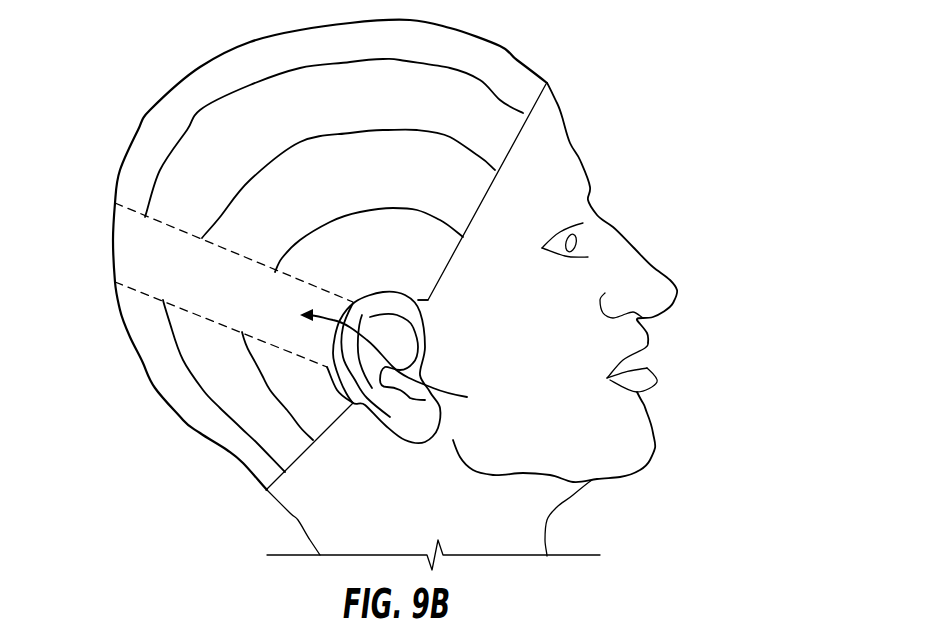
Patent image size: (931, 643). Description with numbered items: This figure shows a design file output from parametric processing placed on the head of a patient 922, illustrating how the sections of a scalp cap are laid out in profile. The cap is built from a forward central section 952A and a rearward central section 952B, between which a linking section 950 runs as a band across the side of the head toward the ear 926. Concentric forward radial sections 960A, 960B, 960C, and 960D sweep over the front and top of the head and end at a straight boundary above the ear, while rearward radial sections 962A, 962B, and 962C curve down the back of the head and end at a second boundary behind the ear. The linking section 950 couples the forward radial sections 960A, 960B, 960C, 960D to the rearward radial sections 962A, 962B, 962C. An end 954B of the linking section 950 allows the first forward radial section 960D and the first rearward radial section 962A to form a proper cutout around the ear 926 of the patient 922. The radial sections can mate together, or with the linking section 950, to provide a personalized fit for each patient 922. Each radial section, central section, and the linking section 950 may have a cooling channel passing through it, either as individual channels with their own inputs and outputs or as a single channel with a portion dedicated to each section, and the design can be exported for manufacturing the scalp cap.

The patient 922 is at (472, 326).
The ear 926 is at (391, 338).
The linking section 950 is at (145, 244).
The forward central section 952A is at (373, 162).
The rearward central section 952B is at (242, 363).
The end of the linking section 954B is at (415, 362).
The forward radial section 960A is at (530, 90).
The forward radial section 960B is at (498, 128).
The forward radial section 960C is at (460, 197).
The first forward radial section 960D is at (426, 277).
The first rearward radial section 962A is at (328, 408).
The rearward radial section 962B is at (287, 440).
The rearward radial section 962C is at (262, 468).